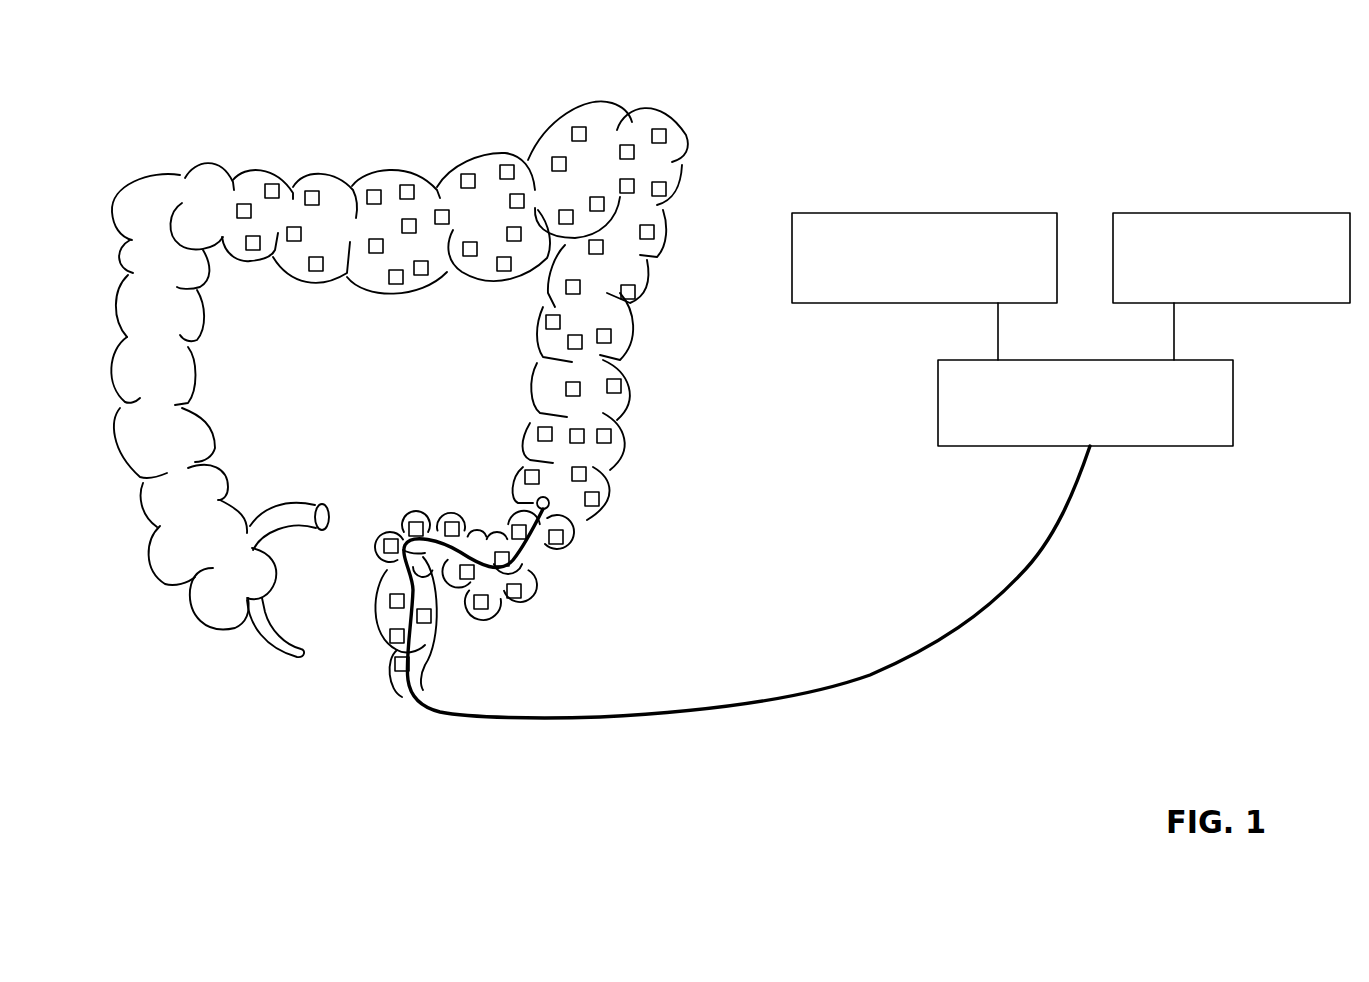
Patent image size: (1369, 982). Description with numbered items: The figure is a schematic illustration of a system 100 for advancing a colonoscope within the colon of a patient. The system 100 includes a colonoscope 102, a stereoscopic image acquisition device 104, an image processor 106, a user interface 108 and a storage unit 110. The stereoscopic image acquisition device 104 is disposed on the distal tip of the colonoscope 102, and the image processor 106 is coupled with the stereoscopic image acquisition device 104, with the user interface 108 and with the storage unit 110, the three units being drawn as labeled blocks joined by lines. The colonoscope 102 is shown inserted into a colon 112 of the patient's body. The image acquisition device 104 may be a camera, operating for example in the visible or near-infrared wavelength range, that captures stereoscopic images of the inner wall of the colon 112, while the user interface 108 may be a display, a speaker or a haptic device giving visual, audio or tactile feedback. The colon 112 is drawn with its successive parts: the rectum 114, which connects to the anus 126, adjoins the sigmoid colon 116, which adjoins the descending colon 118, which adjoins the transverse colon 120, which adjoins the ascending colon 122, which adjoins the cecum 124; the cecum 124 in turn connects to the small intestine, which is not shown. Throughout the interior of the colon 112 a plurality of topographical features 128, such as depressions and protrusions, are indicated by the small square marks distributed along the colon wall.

The system 100 is at (1047, 99).
The colonoscope 102 is at (1035, 553).
The stereoscopic image acquisition device 104 is at (573, 540).
The image processor 106 is at (1233, 385).
The user interface 108 is at (869, 213).
The storage unit 110 is at (1172, 213).
The colon 112 is at (308, 108).
The rectum 114 is at (383, 548).
The sigmoid colon 116 is at (529, 603).
The descending colon 118 is at (636, 333).
The transverse colon 120 is at (402, 168).
The ascending colon 122 is at (108, 368).
The cecum 124 is at (203, 631).
The anus 126 is at (383, 663).
The topographical features 128 is at (455, 521).